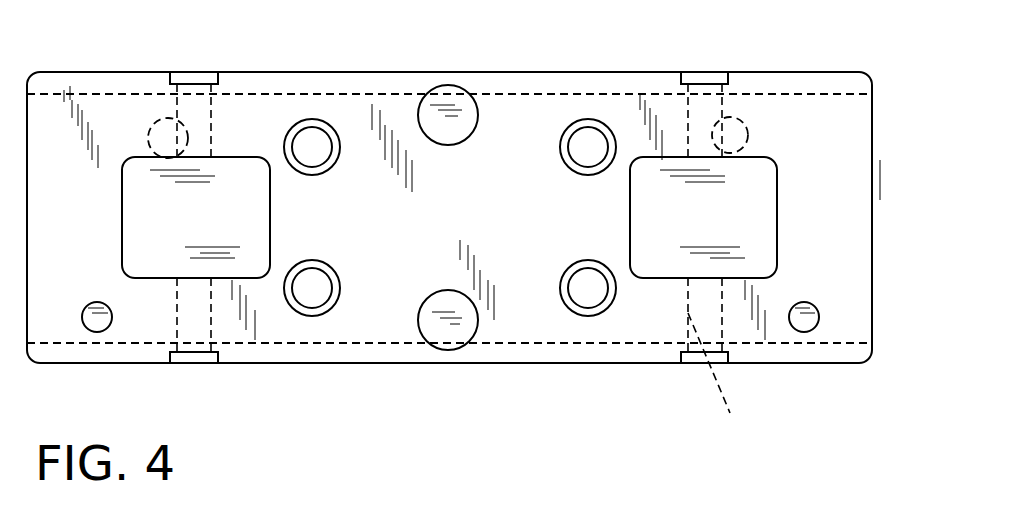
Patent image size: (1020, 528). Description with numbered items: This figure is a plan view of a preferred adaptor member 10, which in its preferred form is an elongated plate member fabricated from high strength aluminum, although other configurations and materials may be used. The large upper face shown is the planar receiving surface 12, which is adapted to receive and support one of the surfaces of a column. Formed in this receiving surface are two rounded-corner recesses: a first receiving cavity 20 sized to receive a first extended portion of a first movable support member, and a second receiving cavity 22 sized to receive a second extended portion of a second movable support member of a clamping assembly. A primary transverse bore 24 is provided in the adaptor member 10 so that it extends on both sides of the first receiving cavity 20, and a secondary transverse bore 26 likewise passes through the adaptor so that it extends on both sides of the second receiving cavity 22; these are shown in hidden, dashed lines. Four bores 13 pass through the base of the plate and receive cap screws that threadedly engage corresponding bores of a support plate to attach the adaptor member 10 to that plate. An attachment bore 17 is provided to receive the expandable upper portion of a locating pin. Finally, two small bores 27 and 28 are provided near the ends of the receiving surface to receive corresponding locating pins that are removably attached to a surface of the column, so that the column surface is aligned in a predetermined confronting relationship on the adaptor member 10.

The adaptor member 10 is at (872, 115).
The planar receiving surface 12 is at (97, 221).
The bores 13 is at (317, 147).
The attachment bore 17 is at (726, 125).
The first receiving cavity 20 is at (207, 233).
The second receiving cavity 22 is at (722, 231).
The primary transverse bore 24 is at (213, 128).
The secondary transverse bore 26 is at (727, 371).
The bore 27 is at (105, 330).
The bore 28 is at (803, 330).